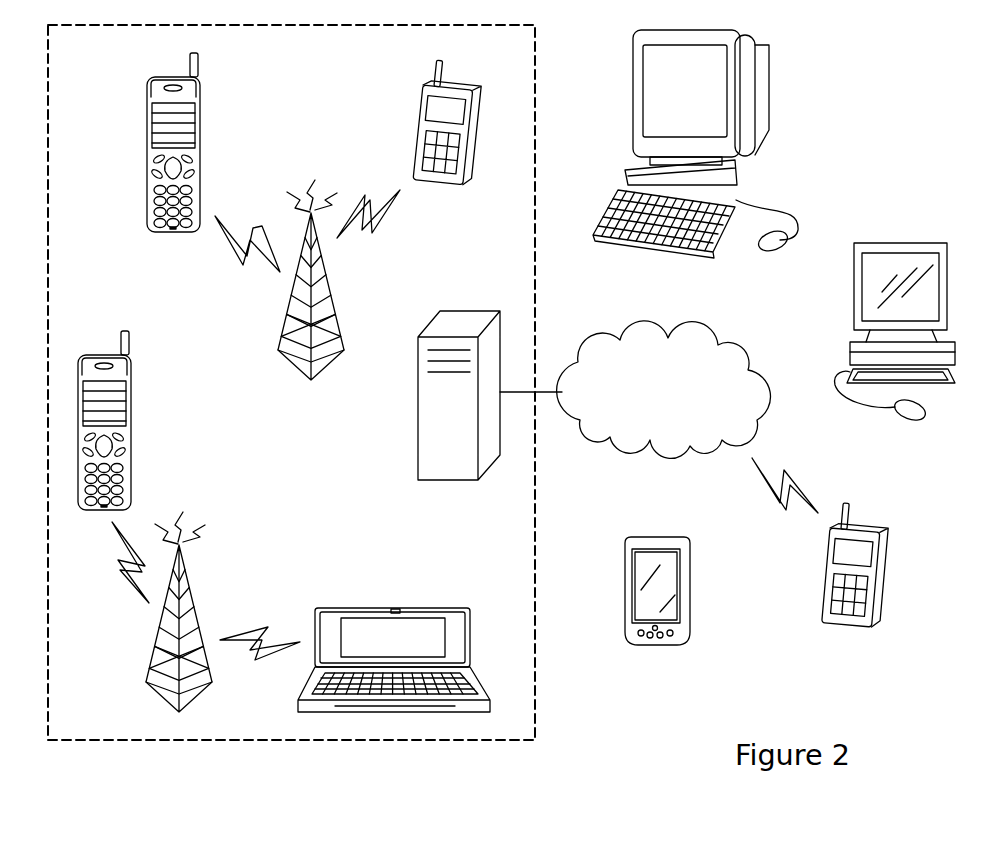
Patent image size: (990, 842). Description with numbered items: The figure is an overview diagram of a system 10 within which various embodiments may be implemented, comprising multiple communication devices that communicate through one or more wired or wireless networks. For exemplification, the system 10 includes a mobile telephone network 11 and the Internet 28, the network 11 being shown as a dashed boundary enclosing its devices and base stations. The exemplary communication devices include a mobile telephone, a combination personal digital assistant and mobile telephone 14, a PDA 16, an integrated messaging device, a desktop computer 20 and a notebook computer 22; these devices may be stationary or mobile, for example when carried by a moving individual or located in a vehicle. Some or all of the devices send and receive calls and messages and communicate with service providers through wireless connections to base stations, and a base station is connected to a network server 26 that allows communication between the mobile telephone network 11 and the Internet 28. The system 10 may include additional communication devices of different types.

The system 10 is at (942, 484).
The mobile telephone network 11 is at (85, 67).
The combination personal digital assistant and mobile telephone 14 is at (395, 612).
The PDA 16 is at (690, 590).
The desktop computer 20 is at (770, 80).
The notebook computer 22 is at (900, 243).
The network server 26 is at (418, 408).
The Internet 28 is at (702, 326).